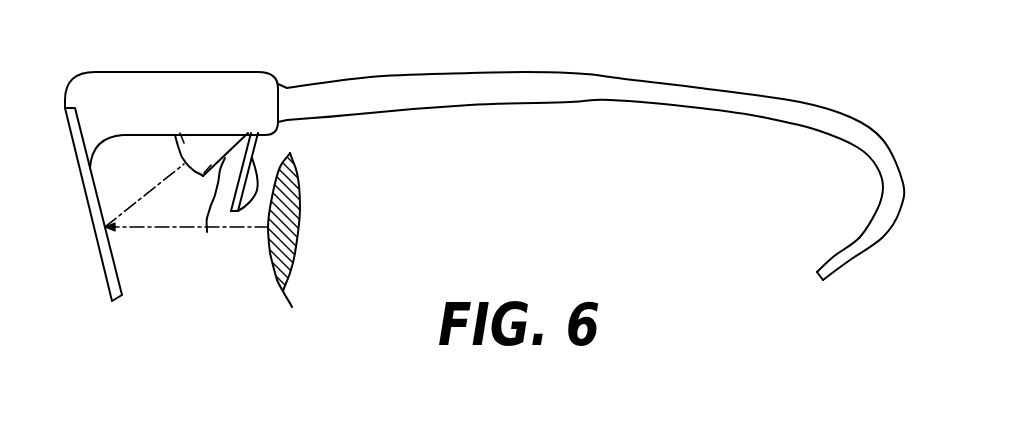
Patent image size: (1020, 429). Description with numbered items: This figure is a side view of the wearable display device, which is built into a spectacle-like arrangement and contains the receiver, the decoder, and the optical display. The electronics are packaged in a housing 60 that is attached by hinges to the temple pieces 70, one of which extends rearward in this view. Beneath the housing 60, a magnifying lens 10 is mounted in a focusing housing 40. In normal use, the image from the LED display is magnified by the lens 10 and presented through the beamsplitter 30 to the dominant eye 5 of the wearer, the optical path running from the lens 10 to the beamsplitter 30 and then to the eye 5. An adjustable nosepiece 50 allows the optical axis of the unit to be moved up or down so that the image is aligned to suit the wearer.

The eye 5 is at (298, 250).
The magnifying lens 10 is at (178, 150).
The beamsplitter 30 is at (98, 247).
The focusing housing 40 is at (208, 232).
The adjustable nosepiece 50 is at (259, 150).
The housing 60 is at (155, 92).
The temple pieces 70 is at (352, 78).